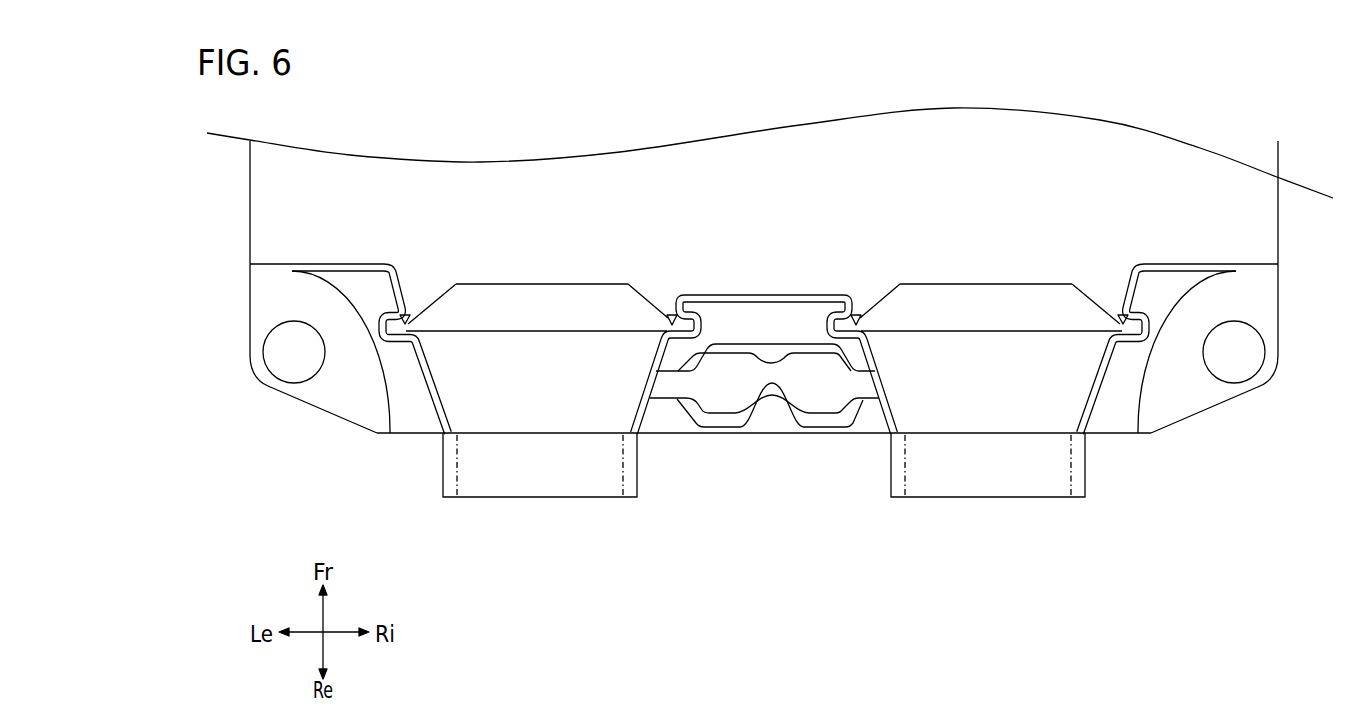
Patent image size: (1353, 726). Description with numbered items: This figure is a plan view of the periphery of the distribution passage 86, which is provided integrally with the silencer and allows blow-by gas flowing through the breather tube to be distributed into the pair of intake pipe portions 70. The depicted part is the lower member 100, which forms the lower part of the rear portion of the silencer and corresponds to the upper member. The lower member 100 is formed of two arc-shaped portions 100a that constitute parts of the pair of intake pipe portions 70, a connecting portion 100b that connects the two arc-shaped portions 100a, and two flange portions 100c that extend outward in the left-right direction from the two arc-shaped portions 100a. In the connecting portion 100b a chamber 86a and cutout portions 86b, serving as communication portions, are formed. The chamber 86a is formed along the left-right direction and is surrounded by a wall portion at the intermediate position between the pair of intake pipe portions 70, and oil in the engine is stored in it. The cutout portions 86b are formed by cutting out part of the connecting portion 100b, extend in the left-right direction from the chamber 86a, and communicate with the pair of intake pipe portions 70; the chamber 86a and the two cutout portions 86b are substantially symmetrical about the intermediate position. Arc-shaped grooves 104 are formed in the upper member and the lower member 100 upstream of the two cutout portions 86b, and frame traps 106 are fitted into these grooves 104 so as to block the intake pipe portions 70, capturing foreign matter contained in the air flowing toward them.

The intake pipe portions 70 is at (497, 497).
The distribution passage 86 is at (767, 424).
The chamber 86a is at (815, 397).
The cutout portions 86b is at (862, 462).
The lower member 100 is at (764, 331).
The arc-shaped portions 100a is at (455, 388).
The connecting portion 100b is at (722, 418).
The flange portions 100c is at (392, 367).
The arc-shaped grooves 104 is at (1119, 316).
The frame traps 106 is at (514, 297).